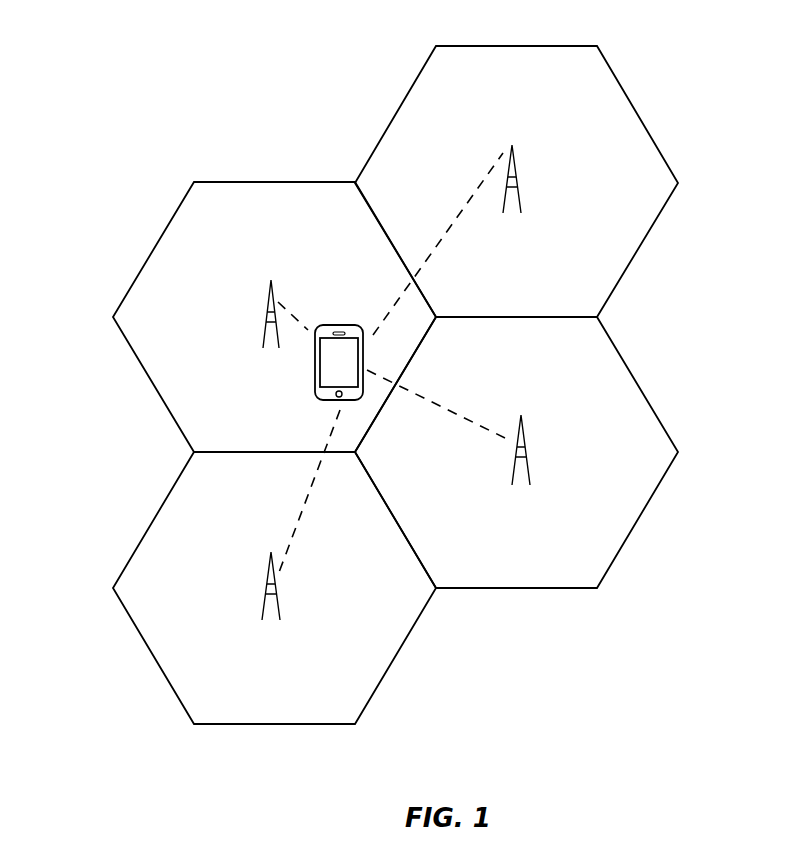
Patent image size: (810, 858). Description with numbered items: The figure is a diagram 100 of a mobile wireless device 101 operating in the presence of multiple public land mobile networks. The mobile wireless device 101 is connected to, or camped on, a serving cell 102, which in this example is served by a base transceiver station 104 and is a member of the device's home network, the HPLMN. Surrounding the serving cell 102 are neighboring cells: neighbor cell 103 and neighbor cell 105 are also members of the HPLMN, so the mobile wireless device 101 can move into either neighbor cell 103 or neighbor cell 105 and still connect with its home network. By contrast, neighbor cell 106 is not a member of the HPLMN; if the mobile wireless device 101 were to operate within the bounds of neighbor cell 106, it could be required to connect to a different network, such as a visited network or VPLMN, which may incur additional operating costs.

The diagram 100 is at (108, 80).
The mobile wireless device 101 is at (313, 365).
The serving cell 102 is at (178, 203).
The neighbor cell 103 is at (402, 100).
The base transceiver station 104 is at (280, 292).
The neighbor cell 105 is at (642, 388).
The neighbor cell 106 is at (172, 487).